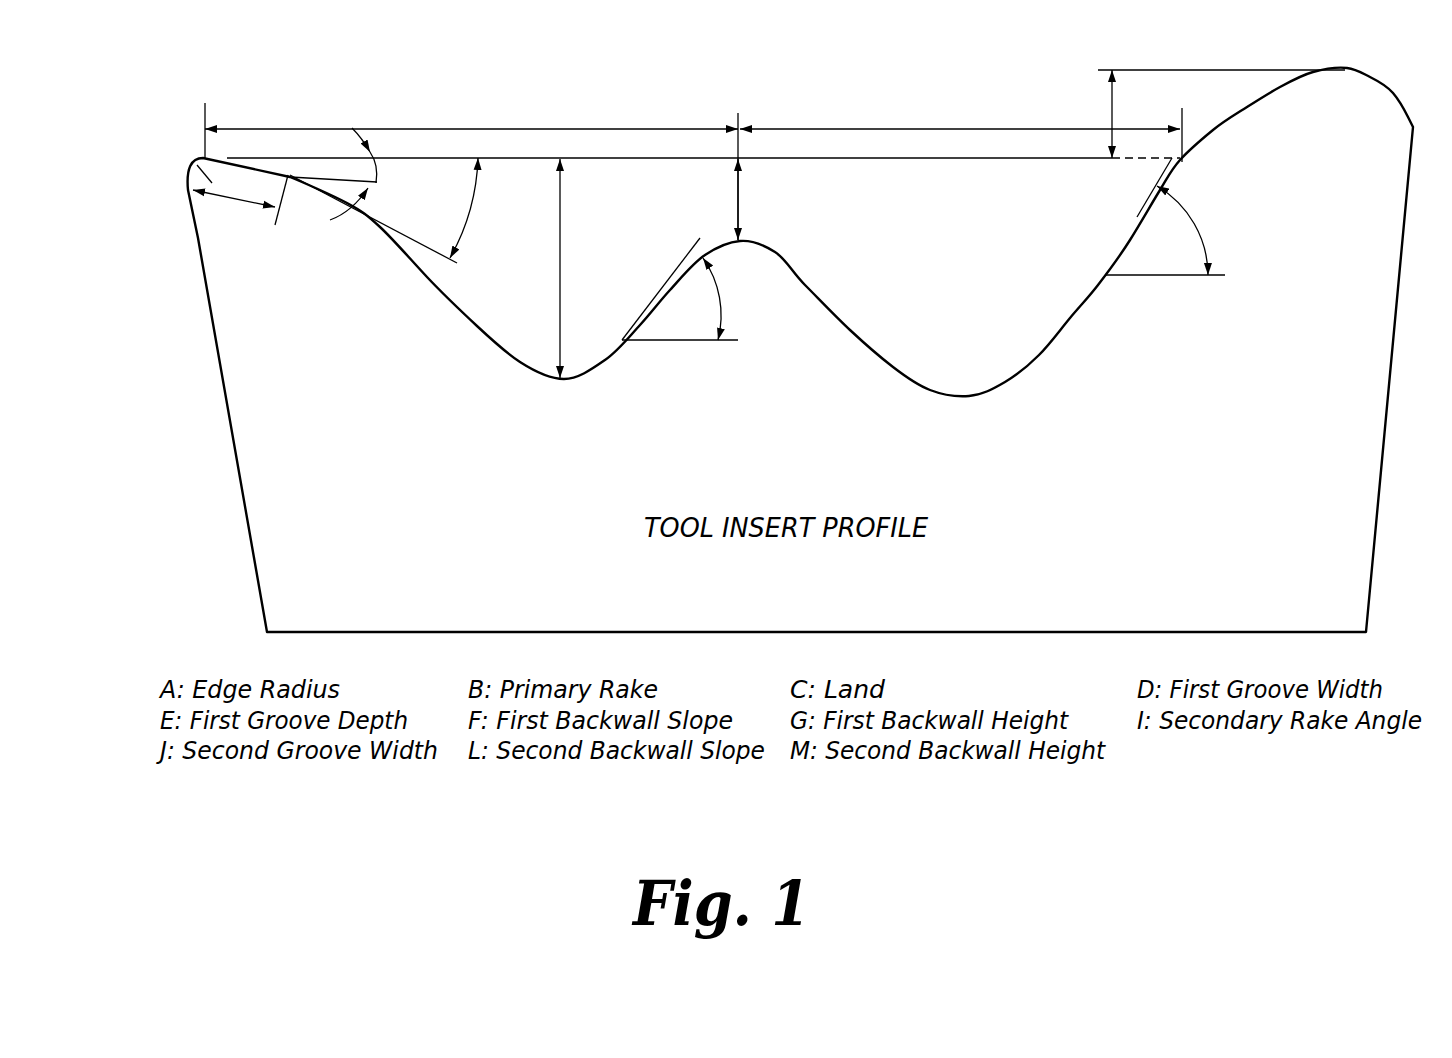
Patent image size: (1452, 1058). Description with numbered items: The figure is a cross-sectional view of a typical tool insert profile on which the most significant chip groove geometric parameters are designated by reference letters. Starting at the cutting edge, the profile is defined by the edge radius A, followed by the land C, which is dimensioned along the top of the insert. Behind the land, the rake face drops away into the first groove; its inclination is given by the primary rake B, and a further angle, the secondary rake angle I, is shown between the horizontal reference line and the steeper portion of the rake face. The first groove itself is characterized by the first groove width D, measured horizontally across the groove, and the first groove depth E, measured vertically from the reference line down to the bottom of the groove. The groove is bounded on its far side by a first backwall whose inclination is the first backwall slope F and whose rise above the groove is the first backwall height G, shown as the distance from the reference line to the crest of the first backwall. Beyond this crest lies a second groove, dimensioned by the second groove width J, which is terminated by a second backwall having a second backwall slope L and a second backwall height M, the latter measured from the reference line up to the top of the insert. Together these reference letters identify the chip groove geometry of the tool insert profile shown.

The edge radius A is at (192, 155).
The primary rake B is at (343, 174).
The land C is at (240, 195).
The first groove width D is at (471, 127).
The first groove depth E is at (577, 268).
The first backwall slope F is at (681, 289).
The first backwall height G is at (757, 176).
The secondary rake angle I is at (391, 210).
The second groove width J is at (961, 129).
The second backwall slope L is at (1165, 216).
The second backwall height M is at (1221, 114).